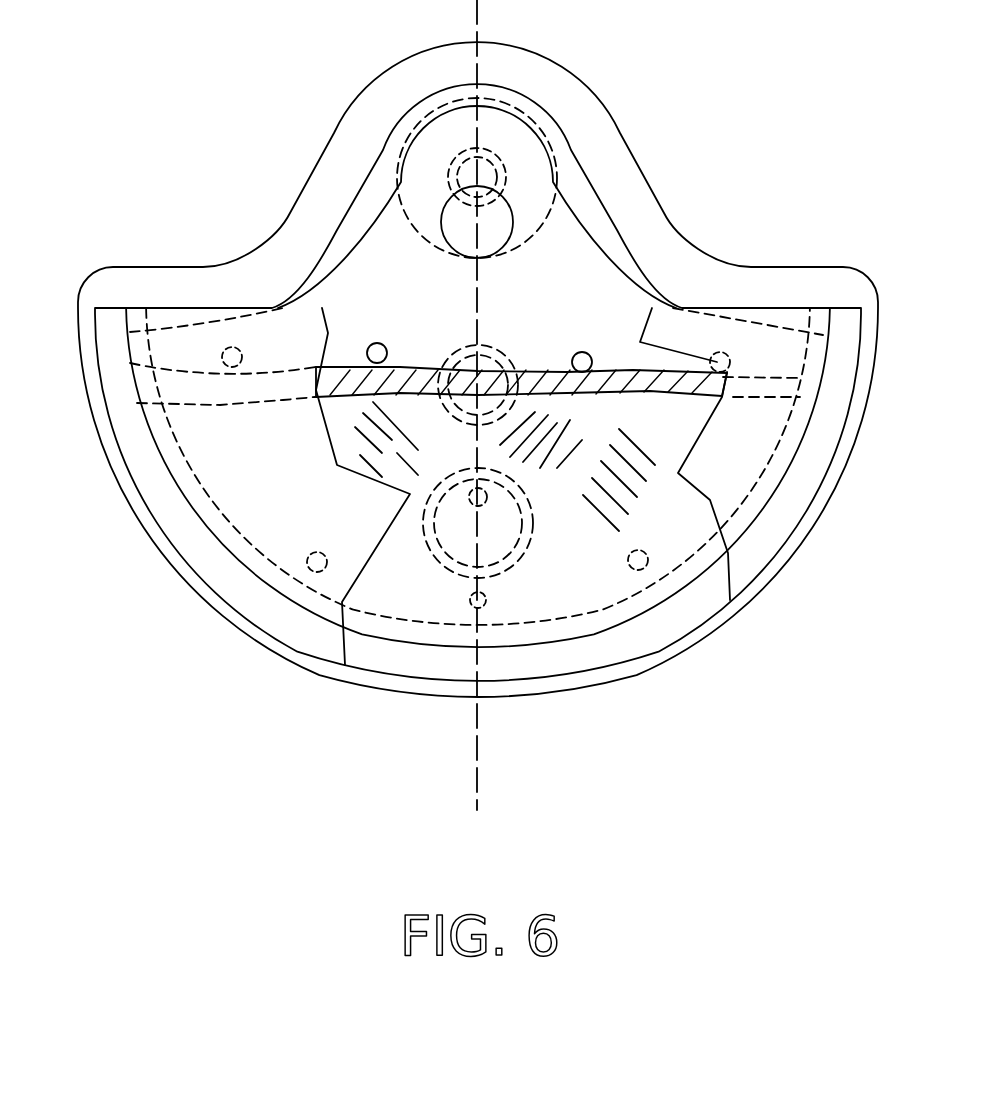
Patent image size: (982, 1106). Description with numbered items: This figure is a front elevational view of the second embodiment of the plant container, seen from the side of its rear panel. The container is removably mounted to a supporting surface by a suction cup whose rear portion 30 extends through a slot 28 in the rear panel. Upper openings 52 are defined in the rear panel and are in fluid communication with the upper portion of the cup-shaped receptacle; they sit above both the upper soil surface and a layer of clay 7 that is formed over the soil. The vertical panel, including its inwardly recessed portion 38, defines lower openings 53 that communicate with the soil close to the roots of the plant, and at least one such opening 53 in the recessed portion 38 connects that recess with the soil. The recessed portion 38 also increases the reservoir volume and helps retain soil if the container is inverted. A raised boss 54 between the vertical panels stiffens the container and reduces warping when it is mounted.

The layer of clay 7 is at (353, 365).
The slot 28 is at (503, 210).
The rear portion 30 is at (500, 162).
The recessed portion 38 is at (447, 563).
The upper openings 52 is at (235, 347).
The lower openings 53 is at (305, 562).
The raised boss 54 is at (385, 378).